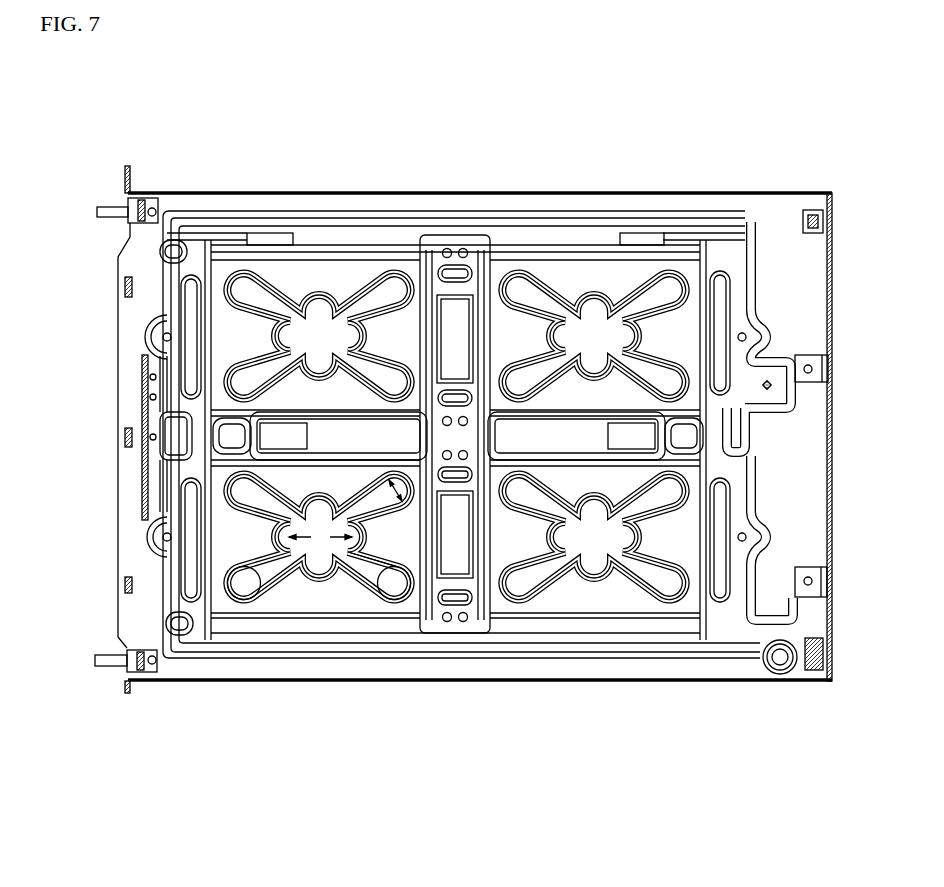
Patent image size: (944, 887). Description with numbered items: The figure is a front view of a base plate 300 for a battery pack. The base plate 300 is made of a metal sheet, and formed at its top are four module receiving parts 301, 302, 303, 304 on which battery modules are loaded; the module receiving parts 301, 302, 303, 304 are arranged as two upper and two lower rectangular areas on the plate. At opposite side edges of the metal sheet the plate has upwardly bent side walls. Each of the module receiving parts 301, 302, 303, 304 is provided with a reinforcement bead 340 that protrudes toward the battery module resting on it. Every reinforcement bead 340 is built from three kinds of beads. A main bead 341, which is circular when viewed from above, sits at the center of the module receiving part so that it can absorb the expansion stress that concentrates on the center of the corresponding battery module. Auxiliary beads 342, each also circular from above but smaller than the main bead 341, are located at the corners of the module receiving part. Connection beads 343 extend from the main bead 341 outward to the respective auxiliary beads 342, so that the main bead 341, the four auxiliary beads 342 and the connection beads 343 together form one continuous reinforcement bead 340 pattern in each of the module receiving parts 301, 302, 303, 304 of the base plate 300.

The base plate 300 is at (108, 135).
The module receiving part 301 is at (318, 266).
The module receiving part 302 is at (331, 612).
The module receiving part 303 is at (635, 600).
The module receiving part 304 is at (622, 268).
The reinforcement bead 340 is at (293, 284).
The main bead 341 is at (340, 553).
The auxiliary bead 342 is at (238, 585).
The connection bead 343 is at (352, 570).